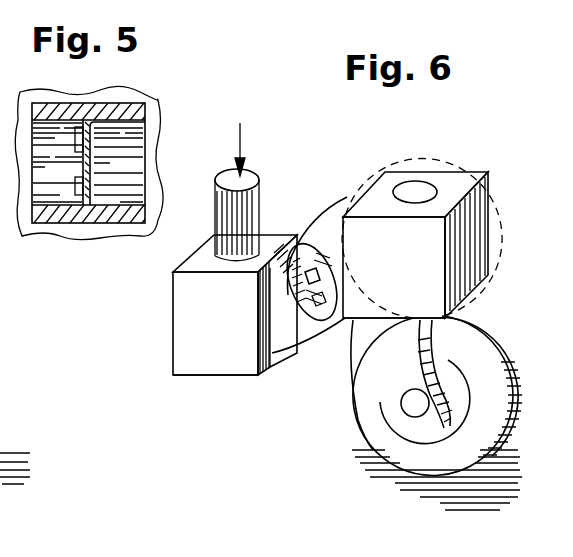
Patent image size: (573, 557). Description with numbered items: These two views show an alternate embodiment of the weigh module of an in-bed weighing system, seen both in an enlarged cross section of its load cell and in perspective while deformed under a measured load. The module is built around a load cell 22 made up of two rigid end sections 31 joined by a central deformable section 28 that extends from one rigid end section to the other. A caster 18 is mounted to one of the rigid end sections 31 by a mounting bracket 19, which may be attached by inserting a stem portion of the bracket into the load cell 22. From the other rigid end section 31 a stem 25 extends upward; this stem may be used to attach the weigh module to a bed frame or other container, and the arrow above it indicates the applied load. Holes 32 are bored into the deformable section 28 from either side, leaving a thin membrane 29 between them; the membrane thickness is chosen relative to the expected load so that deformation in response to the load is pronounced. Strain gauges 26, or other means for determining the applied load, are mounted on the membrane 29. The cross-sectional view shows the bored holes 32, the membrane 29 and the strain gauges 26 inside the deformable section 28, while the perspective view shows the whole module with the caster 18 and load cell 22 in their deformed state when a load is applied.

In FIG. 6, the caster 18 is at (427, 463).
In FIG. 6, the mounting bracket 19 is at (370, 373).
In FIG. 6, the load cell 22 is at (481, 198).
In FIG. 6, the stem 25 is at (262, 197).
In FIG. 5, the strain gauges 26 is at (78, 140).
In FIG. 6, the strain gauges 26 is at (340, 306).
In FIG. 6, the central deformable section 28 is at (322, 236).
In FIG. 5, the membrane 29 is at (98, 142).
In FIG. 6, the membrane 29 is at (310, 303).
In FIG. 6, the rigid end sections 31 is at (455, 182).
In FIG. 5, the holes 32 is at (38, 182).